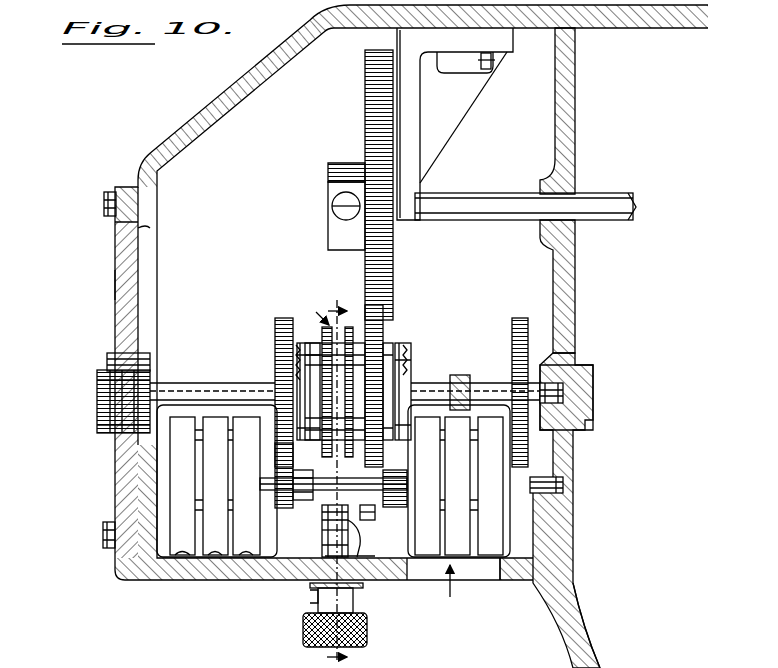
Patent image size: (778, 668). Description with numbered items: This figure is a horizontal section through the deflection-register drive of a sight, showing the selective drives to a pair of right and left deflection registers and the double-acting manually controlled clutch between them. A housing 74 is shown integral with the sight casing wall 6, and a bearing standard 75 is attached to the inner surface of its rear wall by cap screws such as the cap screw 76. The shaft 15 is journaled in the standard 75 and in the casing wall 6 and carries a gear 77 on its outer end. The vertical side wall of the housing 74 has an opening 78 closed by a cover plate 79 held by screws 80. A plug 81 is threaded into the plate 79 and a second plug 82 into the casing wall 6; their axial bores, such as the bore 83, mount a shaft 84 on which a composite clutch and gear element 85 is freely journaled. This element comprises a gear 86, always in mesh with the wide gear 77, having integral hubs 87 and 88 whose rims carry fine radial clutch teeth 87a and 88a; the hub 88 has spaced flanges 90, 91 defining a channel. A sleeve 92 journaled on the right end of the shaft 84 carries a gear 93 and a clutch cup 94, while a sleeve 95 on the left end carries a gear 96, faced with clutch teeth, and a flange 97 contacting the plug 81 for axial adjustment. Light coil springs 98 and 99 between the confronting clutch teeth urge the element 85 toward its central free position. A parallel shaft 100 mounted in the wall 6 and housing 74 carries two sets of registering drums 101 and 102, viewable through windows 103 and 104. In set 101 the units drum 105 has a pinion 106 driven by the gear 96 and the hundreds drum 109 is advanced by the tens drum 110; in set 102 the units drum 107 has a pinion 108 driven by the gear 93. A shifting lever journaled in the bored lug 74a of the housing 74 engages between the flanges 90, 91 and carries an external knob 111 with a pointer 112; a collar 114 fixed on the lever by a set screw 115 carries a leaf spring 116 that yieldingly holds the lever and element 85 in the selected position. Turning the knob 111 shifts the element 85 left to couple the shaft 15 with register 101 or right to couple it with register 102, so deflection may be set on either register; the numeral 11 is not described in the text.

The housing 74 is at (207, 112).
The internal horizontally-bored lug 74a is at (350, 556).
The bearing standard 75 is at (415, 114).
The cap screw 76 is at (494, 66).
The gear 77 is at (366, 112).
The opening 78 is at (150, 228).
The cover plate 79 is at (118, 284).
The screws 80 is at (106, 196).
The plug 81 is at (103, 410).
The second plug 82 is at (568, 368).
The axial bore 83 is at (570, 390).
The shaft 84 is at (460, 385).
The composite clutch and gear element 85 is at (321, 309).
The gear 86 is at (380, 335).
The hub 87 is at (392, 348).
The radial clutch teeth 87a is at (410, 352).
The hub 88 is at (324, 347).
The radial clutch teeth 88a is at (280, 348).
The flange 90 is at (327, 393).
The flange 91 is at (353, 390).
The sleeve 92 is at (487, 385).
The gear 93 is at (515, 325).
The clutch element or cup 94 is at (412, 358).
The sleeve 95 is at (165, 383).
The gear 96 is at (276, 362).
The flange 97 is at (150, 355).
The light coil spring 98 is at (291, 440).
The spring 99 is at (396, 440).
The shaft 100 is at (562, 485).
The set of registering drums 101 is at (202, 560).
The set of registering drums 102 is at (452, 590).
The window 103 is at (160, 588).
The window 104 is at (520, 588).
The units drum 105 is at (260, 550).
The pinion 106 is at (300, 512).
The units drum 107 is at (500, 550).
The pinion 108 is at (502, 520).
The hundreds drum 109 is at (175, 560).
The tens drum 110 is at (332, 467).
The knob 111 is at (368, 630).
The pointer 112 is at (355, 605).
The collar 114 is at (358, 530).
The set screw 115 is at (372, 516).
The leaf spring 116 is at (330, 535).
The axis line 11 is at (338, 474).
The shaft 15 is at (489, 220).
The sight casing wall 6 is at (568, 637).